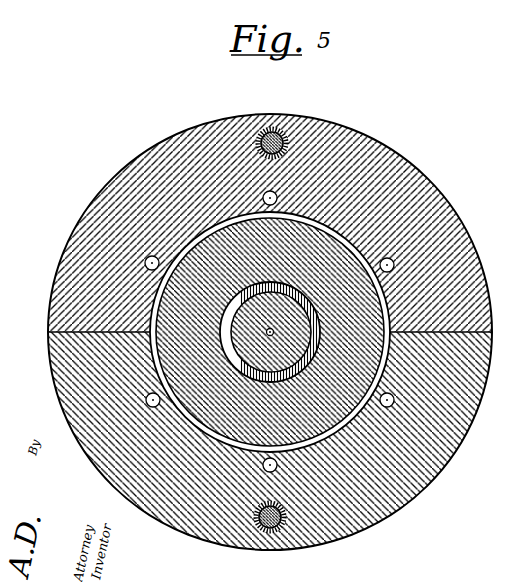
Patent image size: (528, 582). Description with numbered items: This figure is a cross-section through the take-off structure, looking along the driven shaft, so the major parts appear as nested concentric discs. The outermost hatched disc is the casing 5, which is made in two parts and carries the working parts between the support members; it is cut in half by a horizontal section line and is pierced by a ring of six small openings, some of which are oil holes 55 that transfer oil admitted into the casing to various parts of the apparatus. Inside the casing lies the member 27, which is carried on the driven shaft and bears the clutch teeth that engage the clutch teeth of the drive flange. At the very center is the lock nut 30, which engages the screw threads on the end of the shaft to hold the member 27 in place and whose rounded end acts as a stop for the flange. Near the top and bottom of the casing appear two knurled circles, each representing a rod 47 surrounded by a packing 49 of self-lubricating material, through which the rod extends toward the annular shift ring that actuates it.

The casing 5 is at (142, 150).
The member 27 is at (187, 315).
The lock nut 30 is at (300, 293).
The oil holes 55 is at (263, 203).
The rod 47 is at (288, 126).
The packing 49 is at (263, 128).